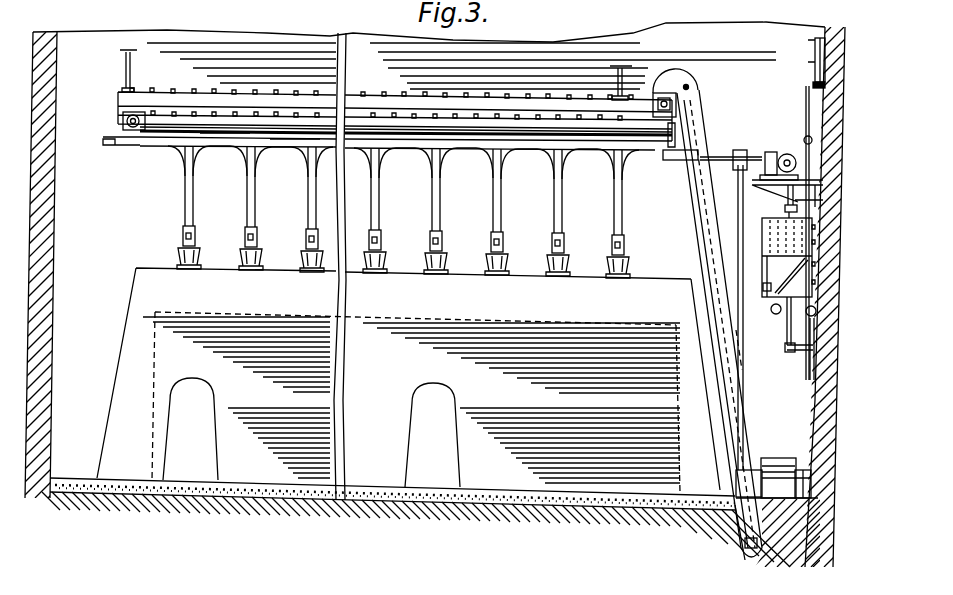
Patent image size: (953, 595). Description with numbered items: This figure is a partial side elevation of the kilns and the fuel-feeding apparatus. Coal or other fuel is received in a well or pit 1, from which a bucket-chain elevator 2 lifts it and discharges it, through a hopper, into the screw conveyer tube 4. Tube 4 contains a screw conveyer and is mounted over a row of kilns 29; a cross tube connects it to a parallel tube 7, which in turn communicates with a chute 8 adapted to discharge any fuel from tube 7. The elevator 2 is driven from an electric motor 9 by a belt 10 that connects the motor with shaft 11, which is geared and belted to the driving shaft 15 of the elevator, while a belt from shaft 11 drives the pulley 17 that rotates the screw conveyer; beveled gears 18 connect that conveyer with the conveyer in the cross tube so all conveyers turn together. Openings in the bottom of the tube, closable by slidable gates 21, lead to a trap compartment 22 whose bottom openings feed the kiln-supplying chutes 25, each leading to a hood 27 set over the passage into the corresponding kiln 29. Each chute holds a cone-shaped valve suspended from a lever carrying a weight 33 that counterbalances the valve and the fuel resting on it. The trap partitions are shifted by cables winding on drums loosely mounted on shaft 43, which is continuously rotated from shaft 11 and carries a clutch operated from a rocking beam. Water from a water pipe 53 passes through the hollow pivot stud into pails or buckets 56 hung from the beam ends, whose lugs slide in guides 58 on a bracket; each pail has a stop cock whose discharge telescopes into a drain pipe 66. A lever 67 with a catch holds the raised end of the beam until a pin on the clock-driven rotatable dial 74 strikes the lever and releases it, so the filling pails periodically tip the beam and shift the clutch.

The well or pit 1 is at (787, 533).
The bucket-chain elevator 2 is at (719, 323).
The screw conveyer tube 4 is at (396, 134).
The tube 7 is at (123, 114).
The chute 8 is at (753, 423).
The electric motor 9 is at (780, 458).
The belt 10 is at (740, 339).
The shaft 11 is at (730, 165).
The driving shaft 15 is at (690, 87).
The pulley 17 is at (683, 142).
The beveled gears 18 is at (123, 123).
The slidable gates 21 is at (270, 133).
The trap compartment 22 is at (295, 143).
The kiln-supplying chute 25 is at (558, 207).
The hood 27 is at (487, 267).
The kiln 29 is at (155, 352).
The weight 33 is at (612, 241).
The shaft 43 is at (787, 172).
The water pipe 53 is at (773, 307).
The pails or buckets 56 is at (788, 257).
The guides 58 is at (765, 290).
The drain pipe 66 is at (786, 337).
The lever 67 is at (806, 115).
The rotatable dial 74 is at (815, 50).